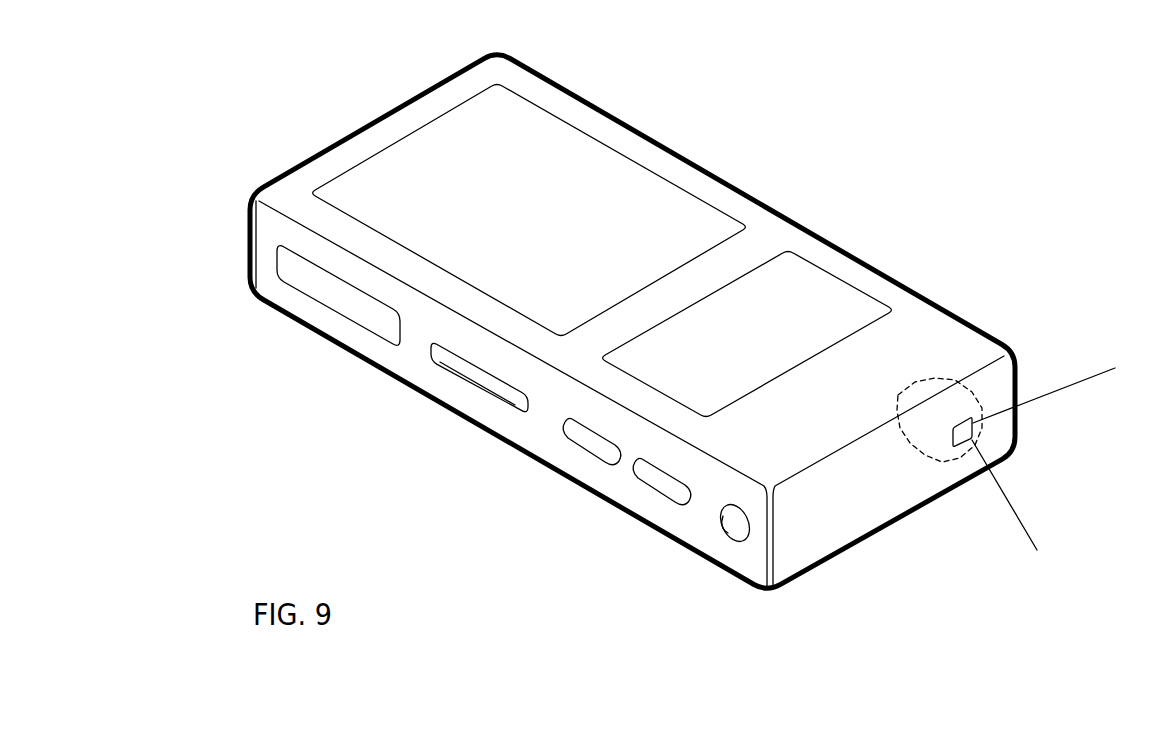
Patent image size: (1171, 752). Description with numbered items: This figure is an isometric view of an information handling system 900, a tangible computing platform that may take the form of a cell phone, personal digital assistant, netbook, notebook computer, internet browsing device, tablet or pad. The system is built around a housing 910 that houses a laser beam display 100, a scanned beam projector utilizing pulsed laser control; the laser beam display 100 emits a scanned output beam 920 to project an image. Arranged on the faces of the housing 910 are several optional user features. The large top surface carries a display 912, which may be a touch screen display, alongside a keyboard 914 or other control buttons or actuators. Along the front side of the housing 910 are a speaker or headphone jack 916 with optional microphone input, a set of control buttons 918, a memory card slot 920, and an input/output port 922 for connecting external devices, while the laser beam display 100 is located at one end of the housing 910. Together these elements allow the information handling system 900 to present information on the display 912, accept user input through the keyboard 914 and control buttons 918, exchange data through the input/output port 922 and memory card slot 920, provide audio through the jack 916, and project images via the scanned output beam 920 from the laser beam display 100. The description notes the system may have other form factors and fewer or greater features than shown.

The information handling system 900 is at (810, 115).
The housing 910 is at (618, 115).
The display 912 is at (415, 160).
The keyboard 914 is at (807, 283).
The speaker or headphone jack 916 is at (735, 524).
The control buttons 918 is at (643, 470).
The scanned output beam / memory card slot 920 is at (443, 357).
The input/output (I/O) port 922 is at (288, 260).
The laser beam display 100 is at (938, 373).